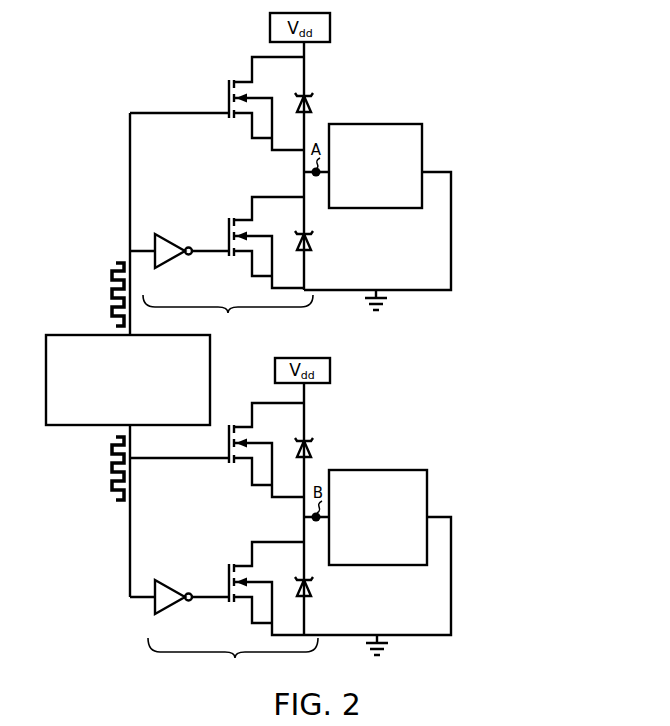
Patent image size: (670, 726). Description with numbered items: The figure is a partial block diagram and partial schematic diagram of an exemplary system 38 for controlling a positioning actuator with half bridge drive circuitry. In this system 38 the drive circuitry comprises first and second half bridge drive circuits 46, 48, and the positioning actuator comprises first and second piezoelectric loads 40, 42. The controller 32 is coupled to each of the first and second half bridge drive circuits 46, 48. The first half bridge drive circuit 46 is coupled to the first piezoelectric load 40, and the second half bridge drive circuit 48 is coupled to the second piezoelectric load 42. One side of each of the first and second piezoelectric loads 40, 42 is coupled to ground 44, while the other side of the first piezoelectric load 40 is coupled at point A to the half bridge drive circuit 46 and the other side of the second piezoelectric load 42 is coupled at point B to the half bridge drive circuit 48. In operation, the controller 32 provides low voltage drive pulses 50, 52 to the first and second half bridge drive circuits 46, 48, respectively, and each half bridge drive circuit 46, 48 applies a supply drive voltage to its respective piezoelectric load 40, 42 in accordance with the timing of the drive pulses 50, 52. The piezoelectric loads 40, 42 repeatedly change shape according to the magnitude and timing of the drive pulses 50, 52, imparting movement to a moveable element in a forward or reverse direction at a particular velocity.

The controller 32 is at (46, 384).
The exemplary system 38 is at (565, 104).
The first piezoelectric load 40 is at (367, 124).
The second piezoelectric load 42 is at (355, 470).
The ground 44 is at (388, 292).
The first half bridge drive circuit 46 is at (221, 199).
The second half bridge drive circuit 48 is at (224, 546).
The low voltage drive pulse 50 is at (110, 302).
The low voltage drive pulse 52 is at (110, 455).